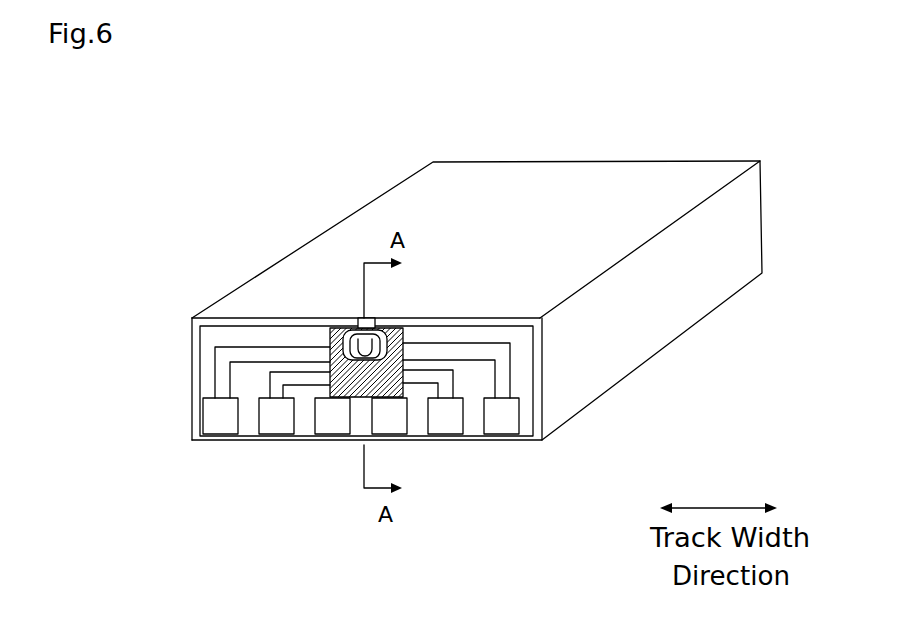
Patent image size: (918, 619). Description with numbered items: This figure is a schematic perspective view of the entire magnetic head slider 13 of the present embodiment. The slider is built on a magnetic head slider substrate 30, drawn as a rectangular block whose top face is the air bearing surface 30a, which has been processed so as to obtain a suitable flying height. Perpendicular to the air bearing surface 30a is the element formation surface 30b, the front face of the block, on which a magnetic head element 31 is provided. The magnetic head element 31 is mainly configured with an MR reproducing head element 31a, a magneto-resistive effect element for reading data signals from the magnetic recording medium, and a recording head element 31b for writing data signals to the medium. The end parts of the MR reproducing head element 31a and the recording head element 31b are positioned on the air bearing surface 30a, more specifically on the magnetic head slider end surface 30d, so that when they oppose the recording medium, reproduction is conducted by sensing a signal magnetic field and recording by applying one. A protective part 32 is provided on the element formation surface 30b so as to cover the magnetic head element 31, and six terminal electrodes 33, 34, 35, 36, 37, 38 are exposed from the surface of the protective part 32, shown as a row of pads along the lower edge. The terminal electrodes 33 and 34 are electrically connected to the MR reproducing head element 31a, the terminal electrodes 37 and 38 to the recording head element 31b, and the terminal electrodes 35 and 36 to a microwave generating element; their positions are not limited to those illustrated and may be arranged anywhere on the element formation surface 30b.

The magnetic head slider 13 is at (540, 131).
The magnetic head slider substrate 30 is at (747, 223).
The air bearing surface 30a is at (388, 207).
The element formation surface 30b is at (215, 322).
The magnetic head slider end surface 30d is at (296, 320).
The magnetic head element 31 is at (510, 242).
The MR reproducing head element 31a is at (372, 318).
The recording head element 31b is at (390, 318).
The protective part 32 is at (545, 398).
The terminal electrode 33 is at (268, 435).
The terminal electrode 34 is at (450, 435).
The terminal electrode 35 is at (318, 435).
The terminal electrode 36 is at (390, 435).
The terminal electrode 37 is at (215, 435).
The terminal electrode 38 is at (497, 435).